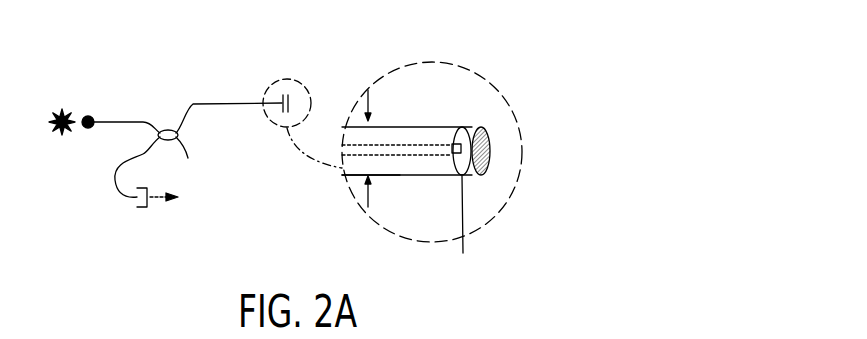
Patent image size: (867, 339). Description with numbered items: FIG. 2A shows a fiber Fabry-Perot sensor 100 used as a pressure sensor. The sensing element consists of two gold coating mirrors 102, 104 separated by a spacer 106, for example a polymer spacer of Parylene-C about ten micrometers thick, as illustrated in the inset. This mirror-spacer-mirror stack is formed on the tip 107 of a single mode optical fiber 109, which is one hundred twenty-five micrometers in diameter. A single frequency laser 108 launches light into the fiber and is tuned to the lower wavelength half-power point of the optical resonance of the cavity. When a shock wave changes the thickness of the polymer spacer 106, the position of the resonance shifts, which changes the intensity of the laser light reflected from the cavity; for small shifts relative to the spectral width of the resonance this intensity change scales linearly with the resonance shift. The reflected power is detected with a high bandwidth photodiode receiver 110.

The fiber Fabry-Perot sensor 100 is at (165, 61).
The gold coating mirror 102 is at (461, 175).
The gold coating mirror 104 is at (489, 162).
The spacer 106 is at (471, 128).
The tip 107 is at (482, 176).
The single frequency laser 108 is at (57, 132).
The single mode optical fiber 109 is at (357, 175).
The high bandwidth photodiode receiver 110 is at (143, 208).